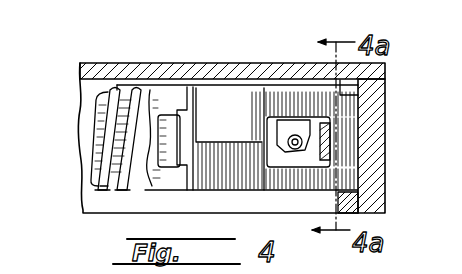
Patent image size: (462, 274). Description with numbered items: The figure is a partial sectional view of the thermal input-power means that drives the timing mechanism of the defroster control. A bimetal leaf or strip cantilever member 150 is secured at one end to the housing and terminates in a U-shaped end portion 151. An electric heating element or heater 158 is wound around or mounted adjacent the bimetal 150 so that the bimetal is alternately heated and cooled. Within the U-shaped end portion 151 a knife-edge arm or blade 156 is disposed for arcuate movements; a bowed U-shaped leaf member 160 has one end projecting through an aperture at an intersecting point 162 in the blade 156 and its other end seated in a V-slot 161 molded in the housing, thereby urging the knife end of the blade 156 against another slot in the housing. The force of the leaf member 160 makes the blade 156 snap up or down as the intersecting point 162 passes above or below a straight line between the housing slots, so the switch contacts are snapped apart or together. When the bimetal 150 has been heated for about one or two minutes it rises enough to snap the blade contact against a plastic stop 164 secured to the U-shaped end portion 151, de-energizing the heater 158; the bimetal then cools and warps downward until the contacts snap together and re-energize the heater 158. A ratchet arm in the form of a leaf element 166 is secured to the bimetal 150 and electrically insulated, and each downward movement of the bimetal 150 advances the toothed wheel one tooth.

The bimetal leaf cantilever member 150 is at (113, 177).
The U-shaped end portion 151 is at (341, 131).
The knife-edge arm or blade 156 is at (162, 99).
The electric heating element 158 is at (128, 99).
The bowed U-shaped leaf member 160 is at (240, 112).
The V-slot 161 is at (362, 205).
The intersecting point 162 is at (237, 115).
The plastic stop 164 is at (280, 130).
The ratchet arm leaf element 166 is at (328, 161).